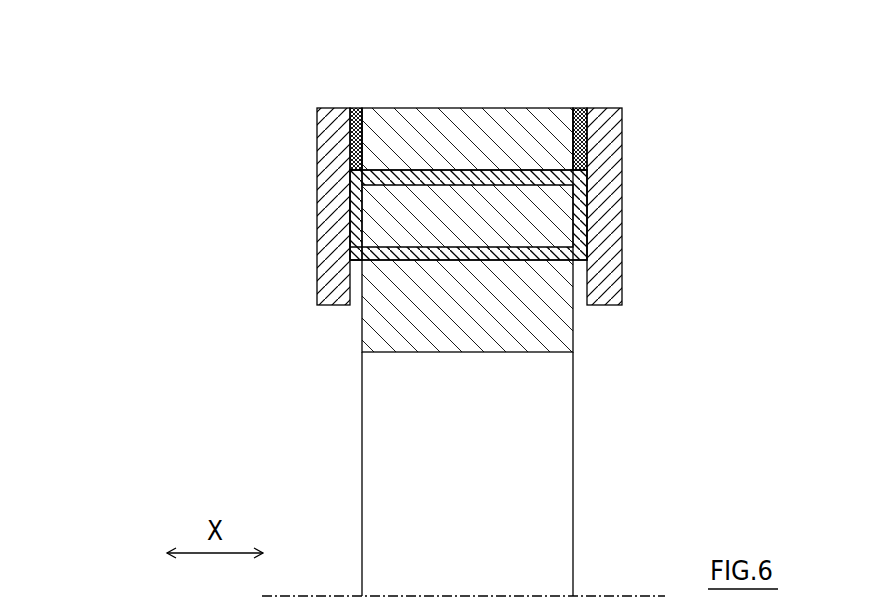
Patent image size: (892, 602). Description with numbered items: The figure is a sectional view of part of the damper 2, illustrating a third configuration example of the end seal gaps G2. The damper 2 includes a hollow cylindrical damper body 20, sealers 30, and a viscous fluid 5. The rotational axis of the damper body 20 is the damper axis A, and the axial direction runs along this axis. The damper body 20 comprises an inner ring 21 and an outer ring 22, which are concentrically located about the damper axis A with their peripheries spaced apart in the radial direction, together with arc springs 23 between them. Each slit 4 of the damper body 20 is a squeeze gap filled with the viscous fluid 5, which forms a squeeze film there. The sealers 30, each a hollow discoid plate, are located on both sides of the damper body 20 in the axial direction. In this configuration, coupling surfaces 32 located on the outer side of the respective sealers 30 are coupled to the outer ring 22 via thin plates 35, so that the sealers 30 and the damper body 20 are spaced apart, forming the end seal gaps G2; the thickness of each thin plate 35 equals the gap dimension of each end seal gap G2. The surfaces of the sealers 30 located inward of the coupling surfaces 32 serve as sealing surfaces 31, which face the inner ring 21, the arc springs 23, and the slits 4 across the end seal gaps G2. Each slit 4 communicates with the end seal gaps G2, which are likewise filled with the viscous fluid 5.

The damper 2 is at (192, 213).
The sealer 30 is at (316, 137).
The thin plate 35 is at (357, 108).
The outer ring 22 is at (583, 141).
The coupling surface 32 is at (363, 128).
The slit 4 is at (578, 183).
The sealing surface 31 is at (350, 236).
The arc spring 23 is at (350, 203).
The viscous fluid 5 is at (350, 262).
The inner ring 21 is at (575, 352).
The damper body 20 is at (360, 408).
The end seal gap G2 is at (355, 312).
The damper axis A is at (327, 595).